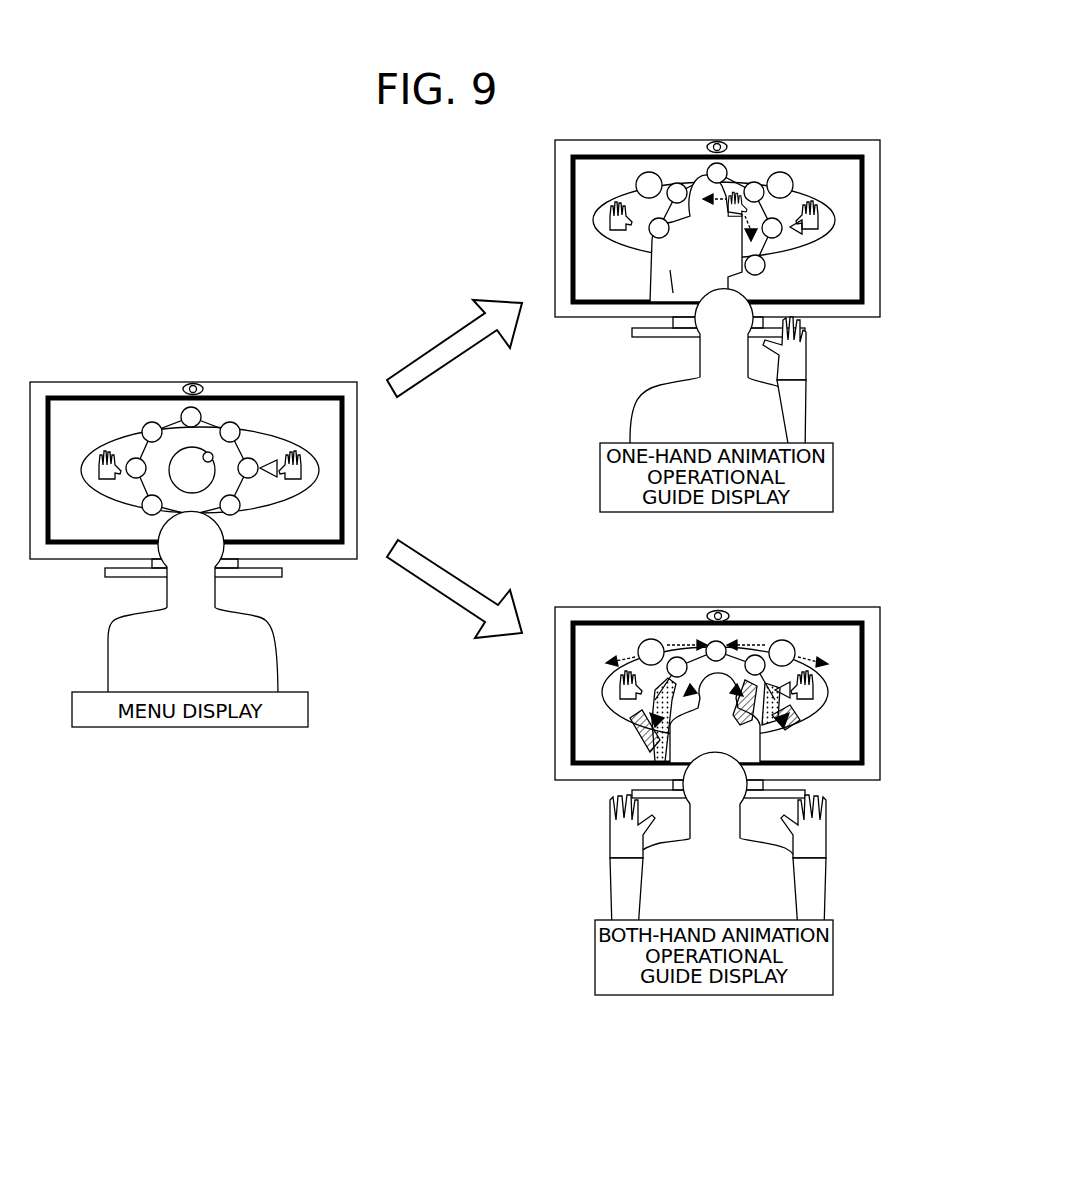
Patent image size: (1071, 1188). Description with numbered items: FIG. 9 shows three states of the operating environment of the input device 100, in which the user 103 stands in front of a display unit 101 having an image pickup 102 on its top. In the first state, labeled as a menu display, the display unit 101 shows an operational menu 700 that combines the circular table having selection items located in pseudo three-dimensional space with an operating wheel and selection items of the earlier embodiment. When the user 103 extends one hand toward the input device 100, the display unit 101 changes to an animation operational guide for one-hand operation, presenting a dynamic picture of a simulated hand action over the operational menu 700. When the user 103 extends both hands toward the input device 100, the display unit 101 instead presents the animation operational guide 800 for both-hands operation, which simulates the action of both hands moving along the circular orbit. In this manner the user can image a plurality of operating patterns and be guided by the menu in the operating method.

The input device 100 is at (357, 416).
The display unit 101 is at (342, 448).
The image pickup 102 is at (193, 383).
The user 103 is at (268, 642).
The operational menu 700 is at (300, 497).
The animation operational guide 800 is at (777, 738).